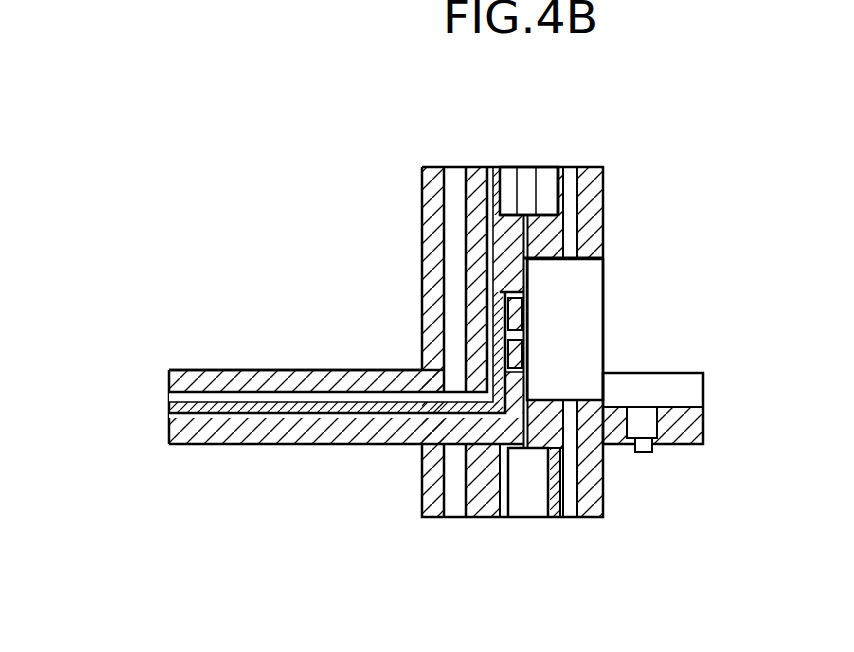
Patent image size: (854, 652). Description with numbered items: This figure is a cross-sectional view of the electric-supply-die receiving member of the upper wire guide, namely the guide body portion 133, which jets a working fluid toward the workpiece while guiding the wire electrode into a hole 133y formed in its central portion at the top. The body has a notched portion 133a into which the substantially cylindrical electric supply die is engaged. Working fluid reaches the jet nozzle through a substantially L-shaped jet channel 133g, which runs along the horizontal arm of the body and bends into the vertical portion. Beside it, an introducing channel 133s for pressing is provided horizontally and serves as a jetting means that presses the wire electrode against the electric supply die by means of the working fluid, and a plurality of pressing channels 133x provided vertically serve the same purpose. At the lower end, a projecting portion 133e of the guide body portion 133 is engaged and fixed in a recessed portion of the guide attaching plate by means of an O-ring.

The guide body portion 133 is at (315, 377).
The jet channel 133g is at (242, 396).
The introducing channel for pressing 133s is at (177, 418).
The hole 133y is at (527, 178).
The pressing channels 133x is at (517, 296).
The notched portion 133a is at (587, 338).
The projecting portion 133e is at (593, 517).